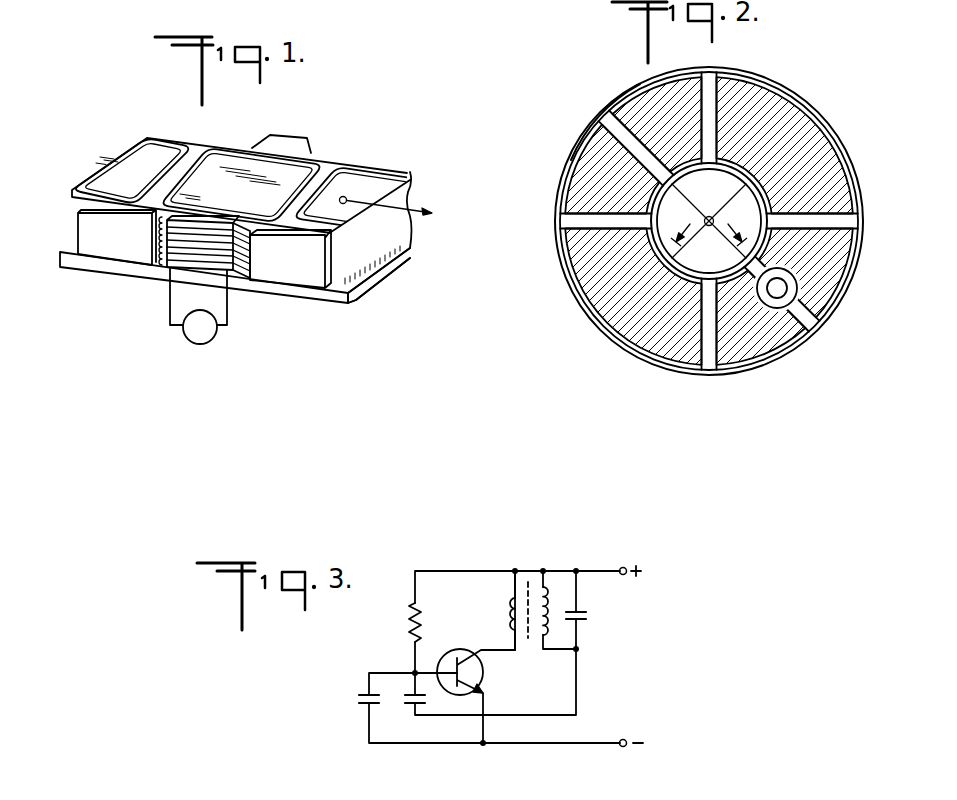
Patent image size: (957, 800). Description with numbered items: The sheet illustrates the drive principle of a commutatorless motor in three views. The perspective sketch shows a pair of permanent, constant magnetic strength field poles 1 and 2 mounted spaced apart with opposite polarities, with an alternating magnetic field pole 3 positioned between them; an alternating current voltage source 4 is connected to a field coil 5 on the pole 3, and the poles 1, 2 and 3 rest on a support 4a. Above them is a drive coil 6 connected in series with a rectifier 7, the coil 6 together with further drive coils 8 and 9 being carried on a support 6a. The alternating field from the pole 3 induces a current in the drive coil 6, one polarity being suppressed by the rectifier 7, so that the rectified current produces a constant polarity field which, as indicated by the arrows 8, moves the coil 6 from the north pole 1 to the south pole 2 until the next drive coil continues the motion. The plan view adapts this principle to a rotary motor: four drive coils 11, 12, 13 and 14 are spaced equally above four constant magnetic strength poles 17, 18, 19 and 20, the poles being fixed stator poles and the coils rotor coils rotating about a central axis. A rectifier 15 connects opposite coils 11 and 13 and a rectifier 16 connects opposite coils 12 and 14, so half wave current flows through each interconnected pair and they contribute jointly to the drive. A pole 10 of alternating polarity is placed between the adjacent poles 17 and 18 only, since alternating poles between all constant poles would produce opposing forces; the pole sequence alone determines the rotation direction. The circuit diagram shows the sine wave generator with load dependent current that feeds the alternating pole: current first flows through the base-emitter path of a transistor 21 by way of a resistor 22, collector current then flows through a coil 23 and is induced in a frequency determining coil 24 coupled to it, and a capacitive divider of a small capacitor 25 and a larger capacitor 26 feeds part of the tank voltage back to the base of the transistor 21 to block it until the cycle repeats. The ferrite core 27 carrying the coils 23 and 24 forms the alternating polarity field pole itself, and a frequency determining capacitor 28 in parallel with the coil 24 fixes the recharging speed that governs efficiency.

In FIG. 1, the field pole 1 is at (100, 250).
In FIG. 1, the field pole 2 is at (306, 275).
In FIG. 1, the alternating magnetic field pole 3 is at (187, 262).
In FIG. 1, the alternating current voltage source 4 is at (183, 340).
In FIG. 1, the base plate end 4a is at (347, 300).
In FIG. 1, the field coil 5 is at (217, 255).
In FIG. 1, the drive coil 6 is at (223, 149).
In FIG. 1, the support 6a is at (168, 134).
In FIG. 1, the rectifier 7 is at (287, 137).
In FIG. 1, the arrows 8 is at (395, 212).
In FIG. 1, the further drive coil 9 is at (147, 136).
In FIG. 2, the alternating polarity magnetic field pole 10 is at (781, 289).
In FIG. 2, the drive coil 11 is at (825, 133).
In FIG. 2, the drive coil 12 is at (800, 335).
In FIG. 2, the drive coil 13 is at (618, 333).
In FIG. 2, the drive coil 14 is at (607, 108).
In FIG. 2, the rectifier 15 is at (709, 221).
In FIG. 2, the rectifier 16 is at (708, 227).
In FIG. 2, the constant magnetic strength pole 17 is at (832, 191).
In FIG. 2, the constant magnetic strength pole 18 is at (748, 337).
In FIG. 2, the constant magnetic strength pole 19 is at (598, 277).
In FIG. 2, the constant magnetic strength pole 20 is at (656, 108).
In FIG. 3, the transistor 21 is at (487, 670).
In FIG. 3, the resistor 22 is at (410, 617).
In FIG. 3, the coil 23 is at (515, 608).
In FIG. 3, the frequency determining coil 24 is at (547, 597).
In FIG. 3, the capacitor 25 is at (407, 702).
In FIG. 3, the capacitor 26 is at (367, 705).
In FIG. 3, the ferrite core 27 is at (522, 584).
In FIG. 3, the frequency determining capacitor 28 is at (583, 613).